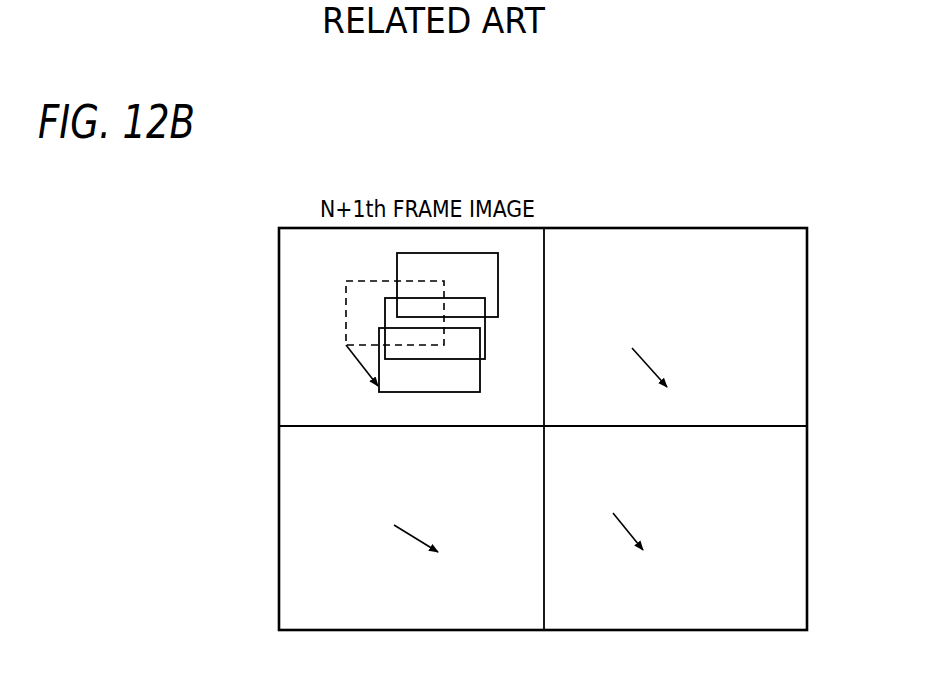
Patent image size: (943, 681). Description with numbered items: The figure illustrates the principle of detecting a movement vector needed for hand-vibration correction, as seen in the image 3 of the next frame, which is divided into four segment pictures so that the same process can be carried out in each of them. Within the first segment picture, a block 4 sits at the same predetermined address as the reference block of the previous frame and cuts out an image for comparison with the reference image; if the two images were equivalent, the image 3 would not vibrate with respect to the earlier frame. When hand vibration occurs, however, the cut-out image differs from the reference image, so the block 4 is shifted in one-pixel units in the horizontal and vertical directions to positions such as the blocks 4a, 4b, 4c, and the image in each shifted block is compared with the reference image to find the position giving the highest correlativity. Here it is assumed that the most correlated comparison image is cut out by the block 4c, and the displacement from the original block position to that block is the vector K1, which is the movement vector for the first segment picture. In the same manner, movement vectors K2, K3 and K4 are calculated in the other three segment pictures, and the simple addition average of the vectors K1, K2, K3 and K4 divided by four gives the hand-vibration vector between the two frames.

The image of (N+1)th frame 3 is at (702, 215).
The block 4 is at (357, 281).
The shifted block 4a is at (498, 287).
The shifted block 4b is at (485, 336).
The shifted block 4c is at (480, 380).
The movement vector K1 is at (360, 365).
The movement vector K2 is at (644, 357).
The movement vector K3 is at (406, 529).
The movement vector K4 is at (623, 521).